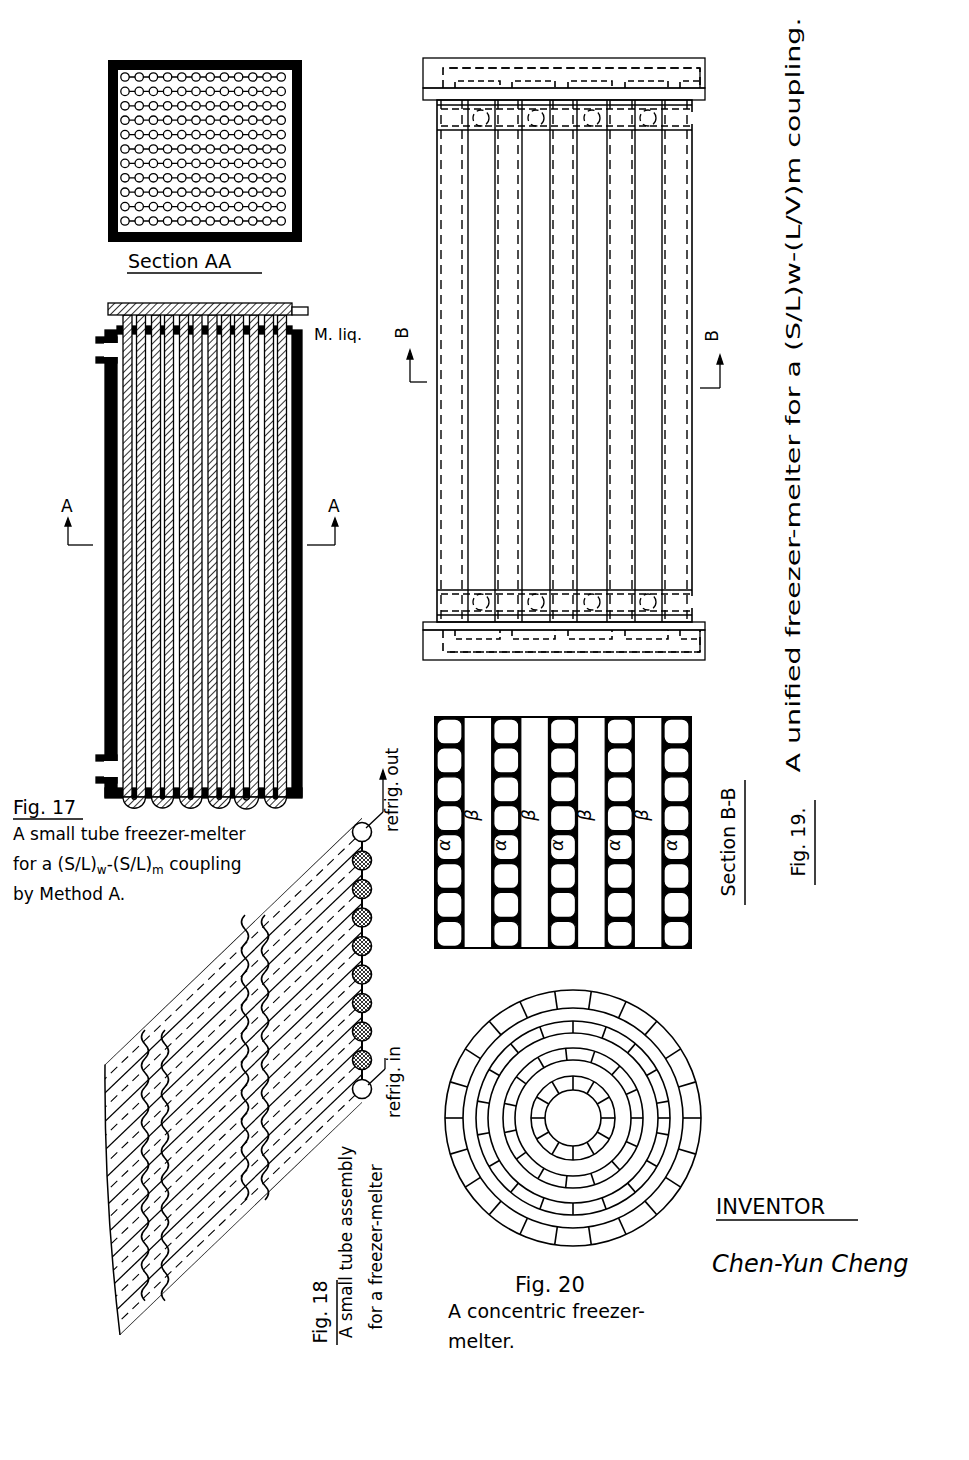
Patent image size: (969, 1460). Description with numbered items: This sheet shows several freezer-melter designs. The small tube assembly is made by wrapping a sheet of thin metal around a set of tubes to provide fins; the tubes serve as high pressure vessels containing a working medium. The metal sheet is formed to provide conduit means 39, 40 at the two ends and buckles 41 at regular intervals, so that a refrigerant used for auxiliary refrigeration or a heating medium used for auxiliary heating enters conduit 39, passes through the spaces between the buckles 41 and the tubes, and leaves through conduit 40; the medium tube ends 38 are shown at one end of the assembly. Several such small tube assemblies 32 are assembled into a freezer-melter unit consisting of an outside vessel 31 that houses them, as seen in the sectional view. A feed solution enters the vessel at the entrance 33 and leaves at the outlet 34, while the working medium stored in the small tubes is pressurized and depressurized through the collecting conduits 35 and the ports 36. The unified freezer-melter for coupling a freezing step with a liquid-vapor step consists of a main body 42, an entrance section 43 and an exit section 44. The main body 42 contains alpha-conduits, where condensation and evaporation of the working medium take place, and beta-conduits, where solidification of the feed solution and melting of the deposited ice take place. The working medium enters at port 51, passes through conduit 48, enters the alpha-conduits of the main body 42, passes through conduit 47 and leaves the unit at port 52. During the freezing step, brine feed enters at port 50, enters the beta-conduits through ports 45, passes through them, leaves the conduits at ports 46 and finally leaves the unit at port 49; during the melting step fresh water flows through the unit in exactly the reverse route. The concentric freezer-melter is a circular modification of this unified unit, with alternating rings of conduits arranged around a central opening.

In FIG. 17, the outside vessel 31 is at (303, 103).
In FIG. 17, the small tube assemblies 32 is at (289, 206).
In FIG. 17, the entrance 33 is at (102, 768).
In FIG. 17, the outlet 34 is at (100, 350).
In FIG. 17, the collecting conduits 35 is at (190, 304).
In FIG. 17, the ports 36 is at (328, 312).
In FIG. 18, the medium tube ends 38 is at (368, 1030).
In FIG. 18, the conduit means 39 is at (222, 1227).
In FIG. 18, the conduit means 40 is at (190, 998).
In FIG. 18, the buckles 41 is at (148, 1227).
In FIG. 19, the main body 42 is at (434, 252).
In FIG. 19, the entrance section 43 is at (428, 652).
In FIG. 19, the exit section 44 is at (433, 73).
In FIG. 19, the ports 45 is at (472, 119).
In FIG. 19, the ports 46 is at (469, 600).
In FIG. 19, the conduit 47 is at (563, 82).
In FIG. 19, the conduit 48 is at (545, 644).
In FIG. 19, the port 49 is at (684, 605).
In FIG. 19, the port 50 is at (684, 115).
In FIG. 19, the port 51 is at (704, 641).
In FIG. 19, the port 52 is at (717, 80).